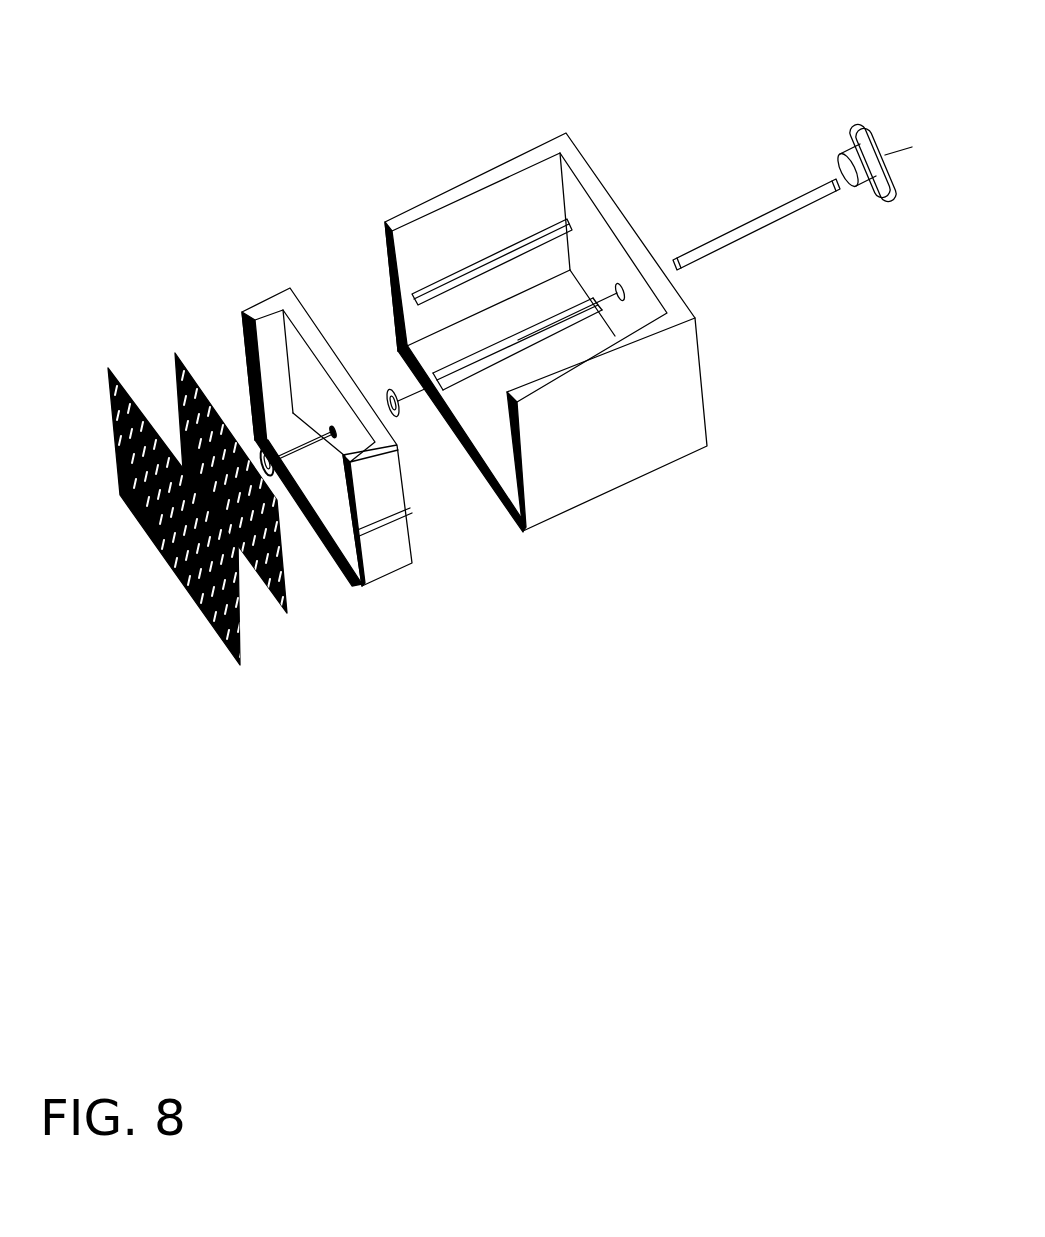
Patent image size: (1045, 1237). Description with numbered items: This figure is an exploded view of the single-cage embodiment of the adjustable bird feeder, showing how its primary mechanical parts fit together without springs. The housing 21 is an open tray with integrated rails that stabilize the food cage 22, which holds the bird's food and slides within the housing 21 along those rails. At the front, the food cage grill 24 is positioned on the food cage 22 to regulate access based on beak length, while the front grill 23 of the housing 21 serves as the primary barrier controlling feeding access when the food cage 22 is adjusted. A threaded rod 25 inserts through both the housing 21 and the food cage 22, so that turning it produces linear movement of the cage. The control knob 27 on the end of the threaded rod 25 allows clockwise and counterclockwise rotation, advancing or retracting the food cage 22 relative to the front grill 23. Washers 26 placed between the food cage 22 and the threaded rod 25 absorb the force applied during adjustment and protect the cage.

The housing 21 is at (475, 172).
The food cage 22 is at (390, 578).
The front grill 23 is at (242, 668).
The food cage grill 24 is at (289, 614).
The threaded rod 25 is at (780, 202).
The washers 26 is at (262, 452).
The control knob 27 is at (897, 197).